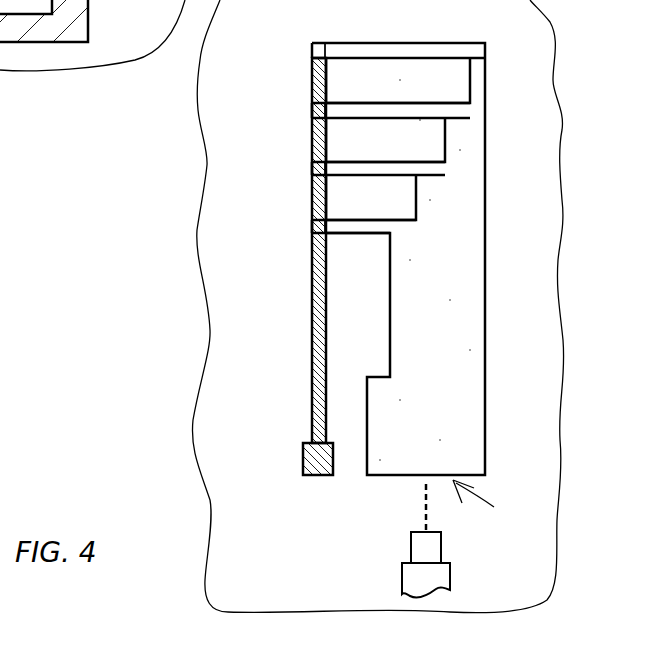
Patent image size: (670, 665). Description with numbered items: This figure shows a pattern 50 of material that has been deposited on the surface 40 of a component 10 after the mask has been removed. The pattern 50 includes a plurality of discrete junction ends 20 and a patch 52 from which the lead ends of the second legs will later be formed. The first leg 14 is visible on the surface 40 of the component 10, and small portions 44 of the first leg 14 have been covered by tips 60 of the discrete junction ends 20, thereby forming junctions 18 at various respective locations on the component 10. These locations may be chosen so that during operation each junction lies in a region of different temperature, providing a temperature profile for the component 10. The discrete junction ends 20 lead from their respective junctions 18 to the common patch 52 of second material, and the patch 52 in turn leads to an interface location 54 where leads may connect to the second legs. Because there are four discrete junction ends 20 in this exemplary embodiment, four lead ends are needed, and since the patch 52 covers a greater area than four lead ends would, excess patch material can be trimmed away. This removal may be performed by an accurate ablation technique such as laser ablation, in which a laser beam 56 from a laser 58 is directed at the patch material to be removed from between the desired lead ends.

The component 10 is at (256, 427).
The first leg 14 is at (318, 478).
The junctions 18 is at (311, 49).
The discrete junction ends 20 is at (397, 43).
The surface 40 is at (256, 350).
The small portions 44 is at (338, 44).
The pattern 50 is at (486, 243).
The patch 52 is at (442, 336).
The interface location 54 is at (487, 500).
The laser beam 56 is at (420, 508).
The laser 58 is at (402, 572).
The tips 60 is at (318, 138).